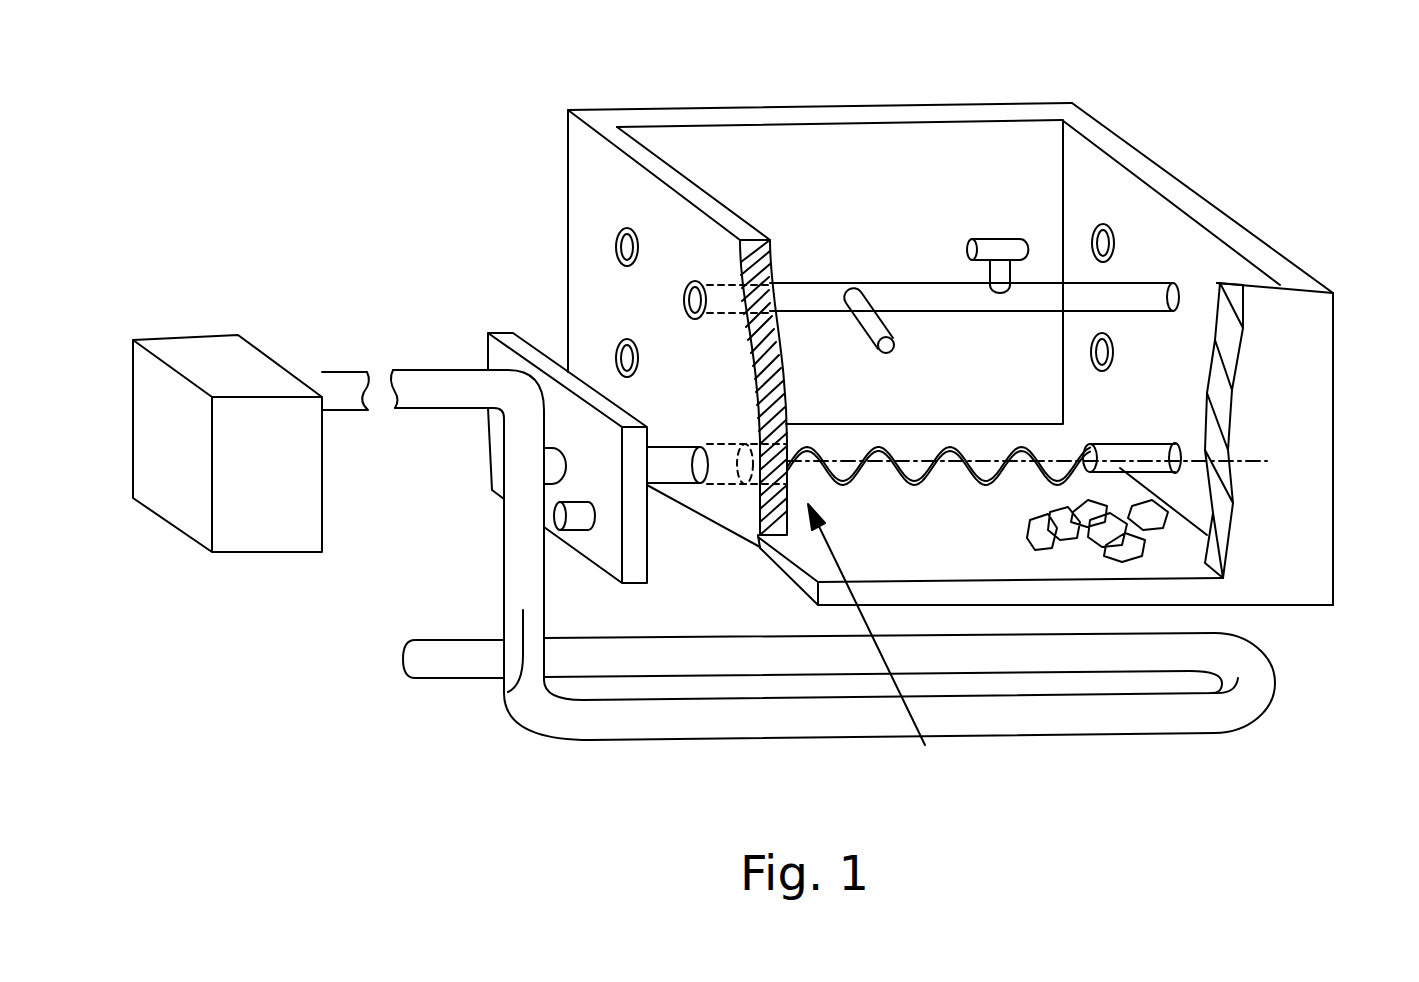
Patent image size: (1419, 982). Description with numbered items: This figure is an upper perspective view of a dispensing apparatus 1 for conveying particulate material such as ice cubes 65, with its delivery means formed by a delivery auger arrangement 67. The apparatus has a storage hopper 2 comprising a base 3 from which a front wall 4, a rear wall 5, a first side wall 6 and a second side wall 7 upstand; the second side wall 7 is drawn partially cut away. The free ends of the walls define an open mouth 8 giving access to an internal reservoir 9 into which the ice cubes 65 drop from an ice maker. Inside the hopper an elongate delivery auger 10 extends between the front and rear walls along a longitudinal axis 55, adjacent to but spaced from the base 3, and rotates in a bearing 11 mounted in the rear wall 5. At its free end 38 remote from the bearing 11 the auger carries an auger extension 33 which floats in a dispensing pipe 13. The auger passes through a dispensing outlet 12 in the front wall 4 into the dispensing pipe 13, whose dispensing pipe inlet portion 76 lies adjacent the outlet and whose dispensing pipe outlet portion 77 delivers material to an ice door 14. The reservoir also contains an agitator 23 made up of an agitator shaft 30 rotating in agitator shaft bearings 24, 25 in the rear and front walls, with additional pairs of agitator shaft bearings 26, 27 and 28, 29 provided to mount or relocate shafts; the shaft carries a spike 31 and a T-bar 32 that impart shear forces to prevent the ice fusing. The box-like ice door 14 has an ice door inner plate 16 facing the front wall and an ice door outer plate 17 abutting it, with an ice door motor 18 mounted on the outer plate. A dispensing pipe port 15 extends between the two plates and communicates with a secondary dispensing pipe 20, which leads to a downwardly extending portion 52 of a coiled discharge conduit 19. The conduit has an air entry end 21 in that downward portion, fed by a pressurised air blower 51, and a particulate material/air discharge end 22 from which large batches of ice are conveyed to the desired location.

The dispensing apparatus 1 is at (518, 208).
The storage hopper 2 is at (951, 345).
The base 3 is at (1262, 592).
The front wall 4 is at (671, 285).
The rear wall 5 is at (1225, 256).
The first side wall 6 is at (838, 110).
The second side wall 7 is at (1247, 356).
The open mouth 8 is at (1012, 137).
The internal reservoir 9 is at (771, 163).
The delivery auger 10 is at (918, 487).
The bearing 11 is at (1096, 461).
The dispensing outlet 12 is at (745, 485).
The dispensing pipe 13 is at (660, 441).
The ice door 14 is at (502, 362).
The dispensing pipe port 15 is at (580, 450).
The ice door inner plate 16 is at (652, 545).
The ice door outer plate 17 is at (487, 467).
The ice door motor 18 is at (568, 498).
The coiled discharge conduit 19 is at (827, 688).
The secondary dispensing pipe 20 is at (504, 555).
The air entry end 21 is at (397, 405).
The particulate material/air discharge end 22 is at (403, 670).
The agitator 23 is at (1140, 275).
The agitator shaft bearing 24 is at (1182, 308).
The agitator shaft bearing 25 is at (682, 294).
The agitator shaft bearing 26 is at (1109, 226).
The agitator shaft bearing 27 is at (620, 240).
The agitator shaft bearing 28 is at (1115, 357).
The agitator shaft bearing 29 is at (622, 343).
The agitator shaft 30 is at (912, 283).
The spike 31 is at (896, 348).
The T-bar 32 is at (990, 240).
The auger extension 33 is at (680, 470).
The free end 38 is at (750, 485).
The pressurised air blower 51 is at (178, 510).
The downwardly extending portion 52 is at (508, 692).
The longitudinal axis 55 is at (1255, 445).
The ice cubes 65 is at (1157, 540).
The delivery auger arrangement 67 is at (875, 647).
The dispensing pipe inlet portion 76 is at (725, 443).
The dispensing pipe outlet portion 77 is at (675, 447).